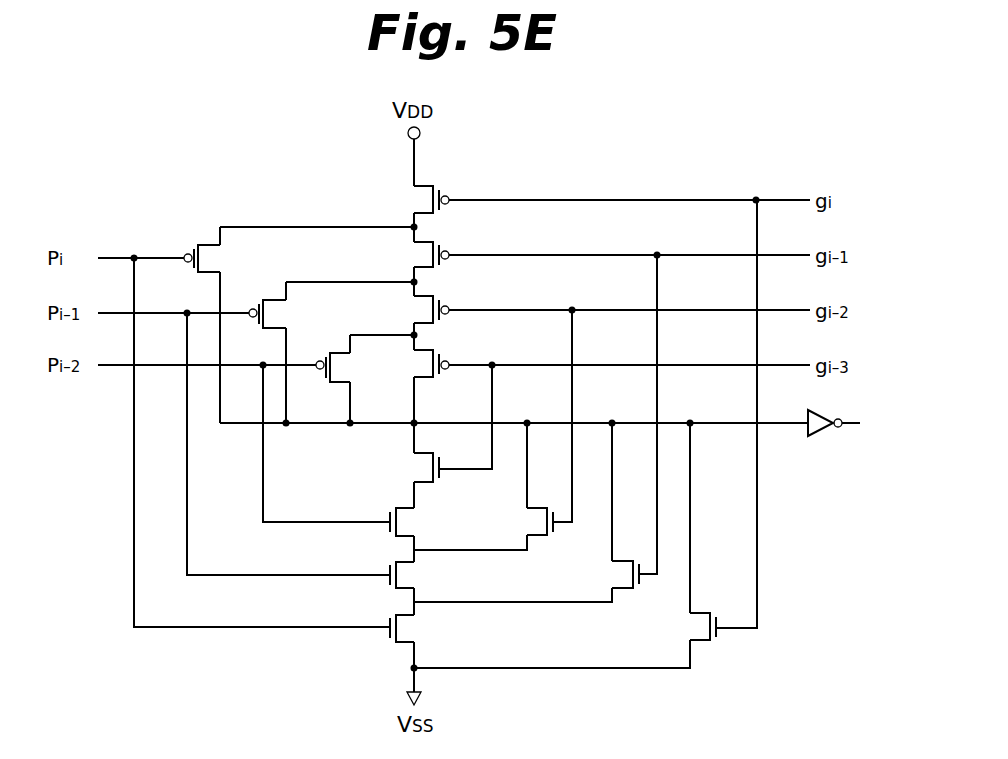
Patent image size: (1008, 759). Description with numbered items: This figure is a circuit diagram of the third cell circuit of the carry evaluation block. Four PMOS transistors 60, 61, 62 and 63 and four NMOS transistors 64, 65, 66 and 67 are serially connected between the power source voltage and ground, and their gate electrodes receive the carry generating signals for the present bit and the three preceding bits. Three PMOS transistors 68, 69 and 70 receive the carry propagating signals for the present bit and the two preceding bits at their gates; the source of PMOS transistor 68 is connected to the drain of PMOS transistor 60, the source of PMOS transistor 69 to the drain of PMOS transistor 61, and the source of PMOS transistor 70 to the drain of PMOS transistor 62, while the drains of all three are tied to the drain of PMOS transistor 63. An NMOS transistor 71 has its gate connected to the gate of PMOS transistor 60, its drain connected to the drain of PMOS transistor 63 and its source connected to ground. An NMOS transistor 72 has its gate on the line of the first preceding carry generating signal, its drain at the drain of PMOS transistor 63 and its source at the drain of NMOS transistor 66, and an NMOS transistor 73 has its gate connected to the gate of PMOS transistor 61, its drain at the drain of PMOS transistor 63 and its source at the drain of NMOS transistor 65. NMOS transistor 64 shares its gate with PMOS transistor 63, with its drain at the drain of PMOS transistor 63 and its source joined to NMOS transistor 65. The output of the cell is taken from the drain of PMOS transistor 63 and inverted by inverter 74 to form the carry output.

The PMOS transistor 60 is at (432, 181).
The PMOS transistor 61 is at (432, 236).
The PMOS transistor 62 is at (432, 289).
The PMOS transistor 63 is at (432, 344).
The NMOS transistor 64 is at (425, 487).
The NMOS transistor 65 is at (420, 540).
The NMOS transistor 66 is at (420, 590).
The NMOS transistor 67 is at (420, 644).
The PMOS transistor 68 is at (222, 270).
The PMOS transistor 69 is at (288, 330).
The PMOS transistor 70 is at (352, 380).
The NMOS transistor 71 is at (700, 648).
The NMOS transistor 72 is at (620, 592).
The NMOS transistor 73 is at (538, 538).
The inverter 74 is at (826, 437).